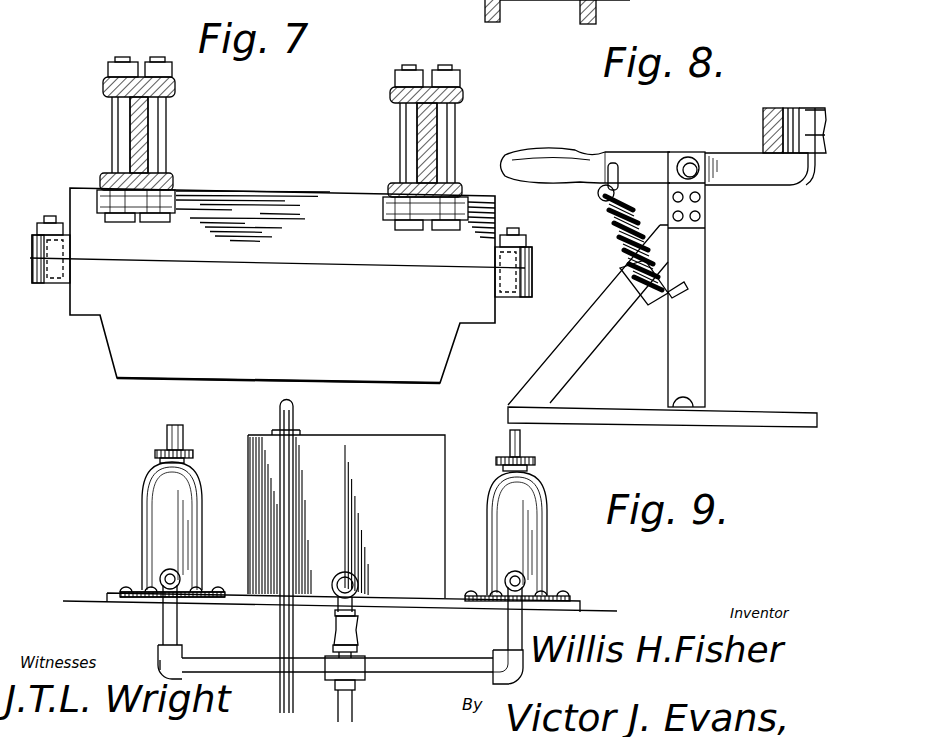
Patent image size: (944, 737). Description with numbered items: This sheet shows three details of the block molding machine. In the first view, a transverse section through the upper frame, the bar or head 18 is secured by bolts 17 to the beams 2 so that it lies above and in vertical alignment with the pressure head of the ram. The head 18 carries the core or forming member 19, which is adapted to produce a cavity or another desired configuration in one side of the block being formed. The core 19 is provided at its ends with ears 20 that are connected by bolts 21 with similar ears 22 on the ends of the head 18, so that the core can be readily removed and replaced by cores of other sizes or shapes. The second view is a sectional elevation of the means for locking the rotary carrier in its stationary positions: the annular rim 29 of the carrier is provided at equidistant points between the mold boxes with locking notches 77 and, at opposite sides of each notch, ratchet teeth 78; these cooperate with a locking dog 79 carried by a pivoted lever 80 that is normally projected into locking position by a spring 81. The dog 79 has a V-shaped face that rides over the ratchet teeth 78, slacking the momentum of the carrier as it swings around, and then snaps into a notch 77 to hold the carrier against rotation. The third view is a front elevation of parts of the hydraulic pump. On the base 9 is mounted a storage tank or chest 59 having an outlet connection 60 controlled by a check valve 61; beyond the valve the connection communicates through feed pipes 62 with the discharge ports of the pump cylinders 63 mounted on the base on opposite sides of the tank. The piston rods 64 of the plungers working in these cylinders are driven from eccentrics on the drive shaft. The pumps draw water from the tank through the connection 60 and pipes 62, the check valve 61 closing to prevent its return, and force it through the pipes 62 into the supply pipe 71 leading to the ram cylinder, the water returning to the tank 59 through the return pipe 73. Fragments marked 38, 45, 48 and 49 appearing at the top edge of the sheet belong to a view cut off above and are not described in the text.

In FIG. 7, the beams 2 is at (175, 90).
In FIG. 7, the bolts 17 is at (165, 135).
In FIG. 7, the bar or head 18 is at (285, 197).
In FIG. 7, the core or forming member 19 is at (277, 285).
In FIG. 7, the ears 20 is at (35, 280).
In FIG. 7, the bolts 21 is at (50, 222).
In FIG. 7, the ears 22 is at (58, 222).
In FIG. 8, the annular rim 29 is at (762, 117).
In FIG. 8, the pivoted lever 80 is at (652, 150).
In FIG. 8, the spring 81 is at (612, 234).
In FIG. 8, the locking notches 77 is at (815, 108).
In FIG. 8, the ratchet teeth 78 is at (813, 166).
In FIG. 8, the locking dog 79 is at (793, 110).
In FIG. 8, the member 38 is at (349, 12).
In FIG. 8, the member 45 is at (620, 0).
In FIG. 8, the member 48 is at (415, 0).
In FIG. 8, the member 49 is at (578, 20).
In FIG. 9, the base 9 is at (417, 605).
In FIG. 9, the storage tank or chest 59 is at (346, 516).
In FIG. 9, the outlet connection 60 is at (336, 654).
In FIG. 9, the check valve 61 is at (352, 632).
In FIG. 9, the feed pipes 62 is at (228, 652).
In FIG. 9, the pump cylinders 63 is at (145, 530).
In FIG. 9, the rods 64 is at (184, 443).
In FIG. 9, the supply pipe 71 is at (352, 703).
In FIG. 9, the return pipe 73 is at (296, 455).